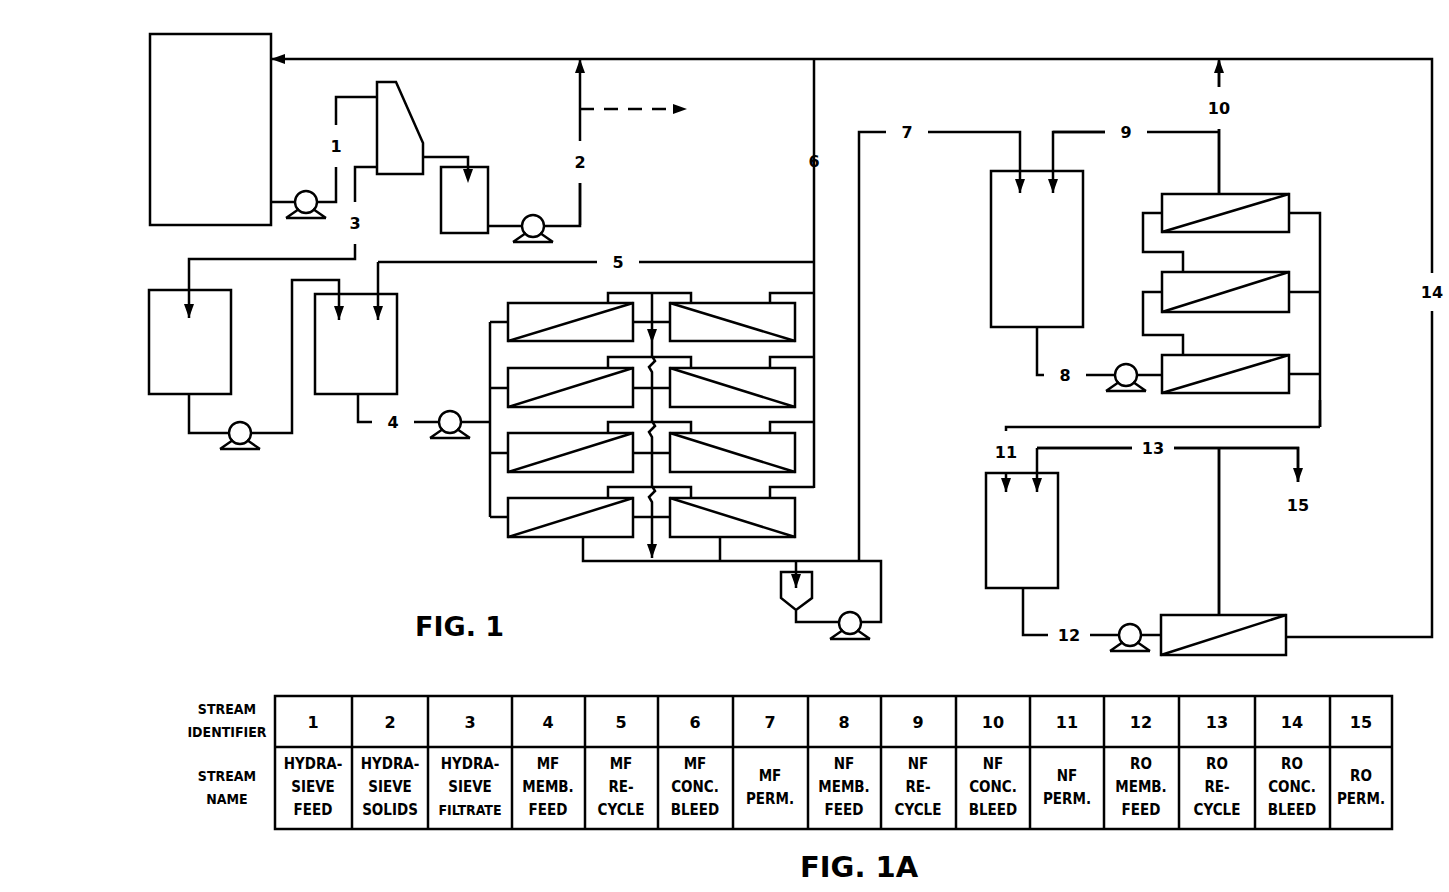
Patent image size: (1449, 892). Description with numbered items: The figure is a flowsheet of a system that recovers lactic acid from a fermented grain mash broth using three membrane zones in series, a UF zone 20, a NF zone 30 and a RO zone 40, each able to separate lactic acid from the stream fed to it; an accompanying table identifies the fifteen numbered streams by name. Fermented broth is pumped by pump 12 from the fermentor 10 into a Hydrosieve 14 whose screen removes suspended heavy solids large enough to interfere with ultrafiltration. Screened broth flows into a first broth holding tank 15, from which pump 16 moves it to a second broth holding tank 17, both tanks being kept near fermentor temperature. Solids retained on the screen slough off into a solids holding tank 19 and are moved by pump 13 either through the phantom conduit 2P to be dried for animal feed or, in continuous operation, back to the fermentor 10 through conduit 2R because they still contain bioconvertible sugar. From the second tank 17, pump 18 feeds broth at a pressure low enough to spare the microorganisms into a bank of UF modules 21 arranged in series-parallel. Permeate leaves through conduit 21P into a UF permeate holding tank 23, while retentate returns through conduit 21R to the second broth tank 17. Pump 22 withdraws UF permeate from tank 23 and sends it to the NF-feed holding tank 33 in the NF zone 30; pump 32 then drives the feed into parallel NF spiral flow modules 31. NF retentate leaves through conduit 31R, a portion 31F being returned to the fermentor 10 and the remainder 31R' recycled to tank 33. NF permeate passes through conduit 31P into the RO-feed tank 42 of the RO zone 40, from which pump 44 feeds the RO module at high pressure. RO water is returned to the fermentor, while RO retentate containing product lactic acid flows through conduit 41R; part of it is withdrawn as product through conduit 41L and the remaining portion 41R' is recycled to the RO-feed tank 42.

The fermentor 10 is at (210, 129).
The pump 12 is at (310, 193).
The Hydrosieve 14 is at (413, 118).
The solids holding tank 19 is at (488, 197).
The pump 13 is at (547, 229).
The conduit 2R is at (583, 200).
The conduit 2P is at (614, 111).
The conduit 21R is at (678, 262).
The first broth holding tank 15 is at (190, 342).
The pump 16 is at (246, 421).
The second broth holding tank 17 is at (356, 344).
The pump 18 is at (446, 410).
The UF zone 20 is at (636, 308).
The UF modules 21 is at (662, 308).
The conduit 21P is at (693, 562).
The UF permeate holding tank 23 is at (815, 588).
The pump 22 is at (862, 631).
The NF-feed holding tank 33 is at (1037, 249).
The recycled NF retentate 31R' is at (1072, 109).
The portion of NF retentate 31F is at (1224, 79).
The conduit 31R is at (1259, 160).
The pump 32 is at (1120, 365).
The NF zone 30 is at (1225, 310).
The NF spiral flow modules 31 is at (1273, 395).
The conduit 31P is at (1320, 400).
The RO-feed tank 42 is at (1022, 530).
The RO zone 40 is at (978, 476).
The recycled RO retentate 41R' is at (1091, 469).
The conduit 41L is at (1269, 450).
The conduit 41R is at (1251, 531).
The pump 44 is at (1124, 621).